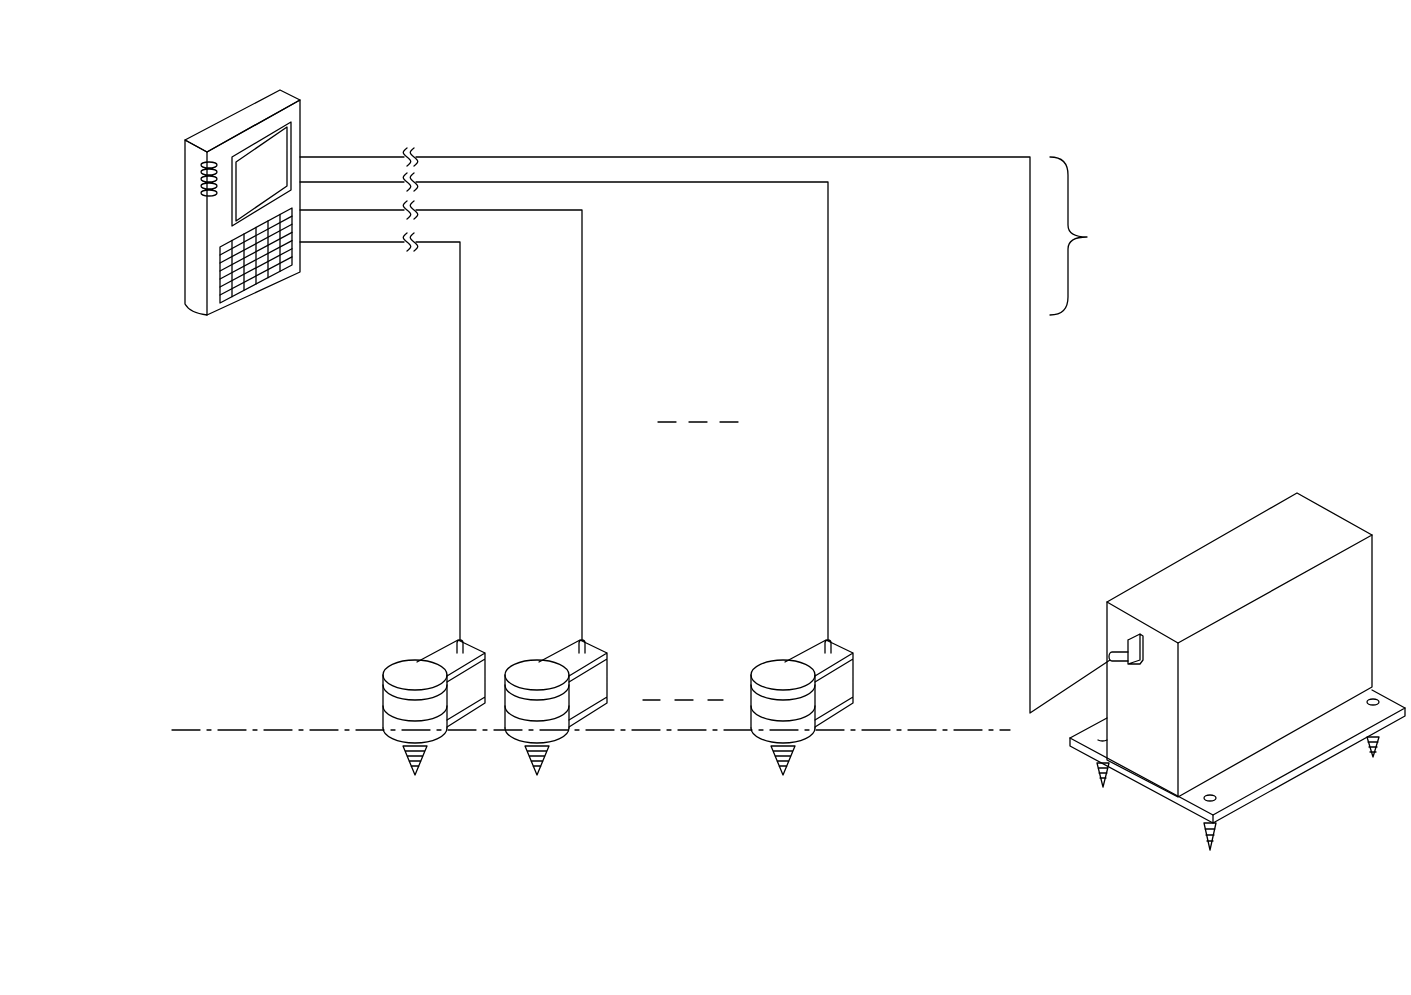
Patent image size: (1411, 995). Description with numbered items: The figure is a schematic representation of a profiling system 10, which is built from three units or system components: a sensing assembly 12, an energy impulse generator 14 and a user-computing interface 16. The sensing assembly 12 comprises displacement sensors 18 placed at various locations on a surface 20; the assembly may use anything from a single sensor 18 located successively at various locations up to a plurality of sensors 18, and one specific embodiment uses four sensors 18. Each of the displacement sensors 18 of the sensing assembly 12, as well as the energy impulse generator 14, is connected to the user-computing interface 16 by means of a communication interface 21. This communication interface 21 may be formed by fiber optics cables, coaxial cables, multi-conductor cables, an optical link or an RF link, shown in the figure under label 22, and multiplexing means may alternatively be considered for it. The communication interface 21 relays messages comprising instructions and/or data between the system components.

The profiling system 10 is at (222, 414).
The sensing assembly 12 is at (380, 805).
The energy impulse generator 14 is at (1265, 793).
The user-computing interface 16 is at (222, 96).
The displacement sensor 18 is at (390, 735).
The surface 20 is at (237, 712).
The communication interface 21 is at (1087, 237).
The cable or link 22 is at (460, 395).